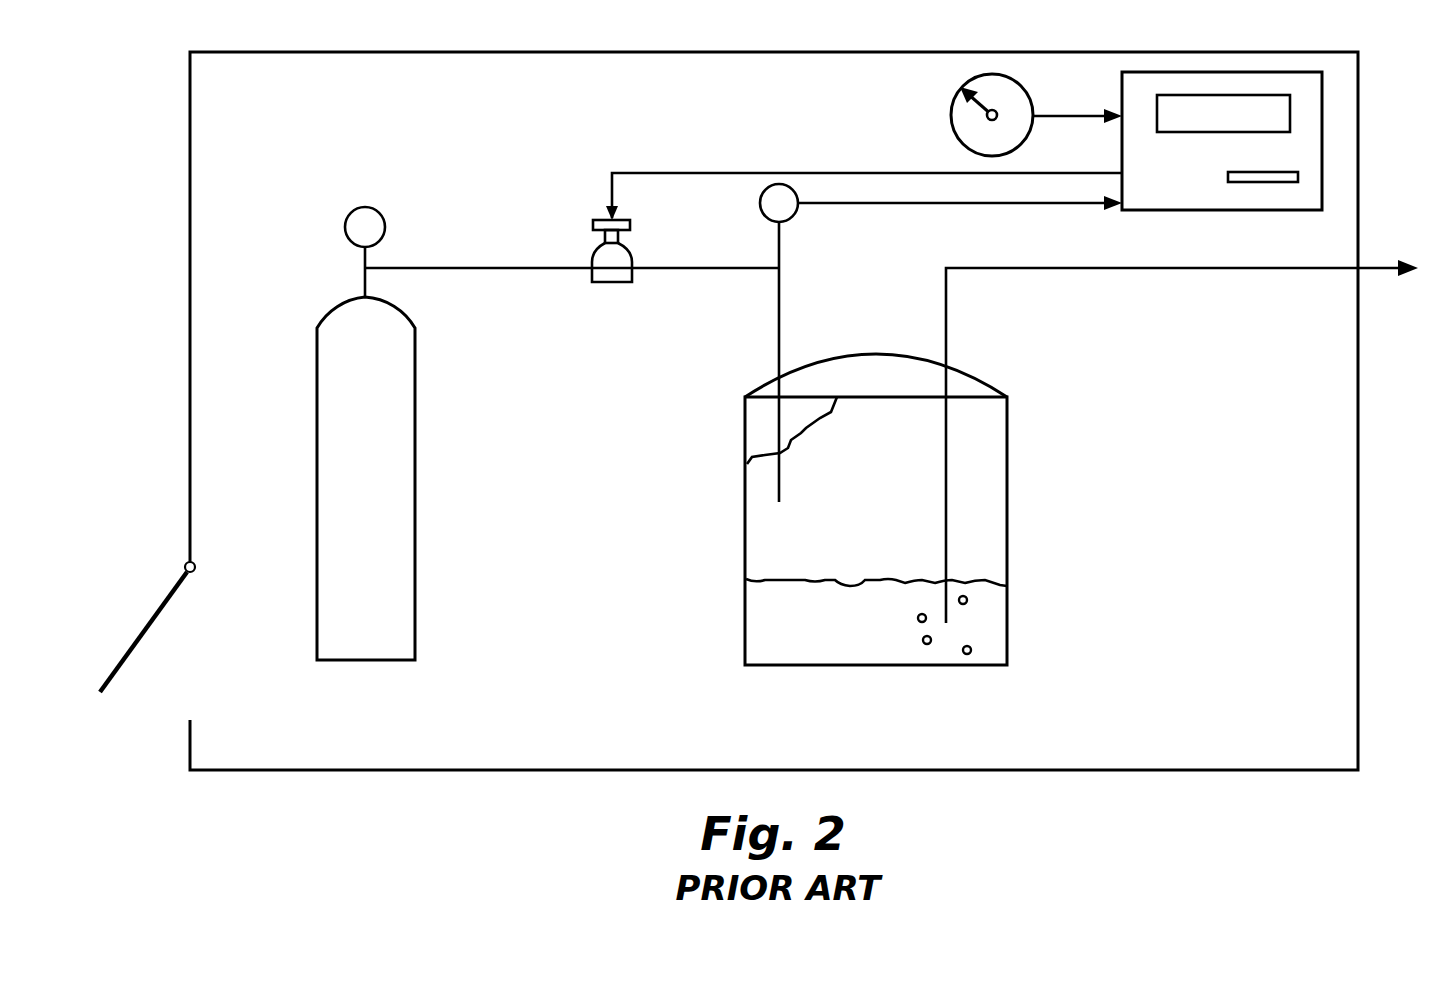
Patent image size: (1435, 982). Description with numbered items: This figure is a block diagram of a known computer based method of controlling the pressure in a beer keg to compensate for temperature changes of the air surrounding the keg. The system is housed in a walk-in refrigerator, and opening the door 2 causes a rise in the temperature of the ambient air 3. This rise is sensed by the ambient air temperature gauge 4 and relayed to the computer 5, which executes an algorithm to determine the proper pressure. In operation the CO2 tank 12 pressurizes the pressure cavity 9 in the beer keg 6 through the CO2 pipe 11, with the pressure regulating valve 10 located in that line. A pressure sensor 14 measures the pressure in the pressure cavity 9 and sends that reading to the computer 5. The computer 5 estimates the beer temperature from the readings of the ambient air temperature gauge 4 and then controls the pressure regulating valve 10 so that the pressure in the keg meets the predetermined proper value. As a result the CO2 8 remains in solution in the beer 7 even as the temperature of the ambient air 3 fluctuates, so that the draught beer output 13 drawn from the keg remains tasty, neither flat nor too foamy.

The door 2 is at (137, 647).
The ambient air 3 is at (600, 690).
The ambient air temperature gauge 4 is at (950, 135).
The computer 5 is at (1197, 210).
The beer keg 6 is at (1008, 442).
The beer 7 is at (888, 602).
The CO2 8 is at (973, 650).
The pressure cavity 9 is at (989, 496).
The pressure regulating valve 10 is at (592, 253).
The CO2 pipe 11 is at (733, 268).
The CO2 tank 12 is at (408, 469).
The draught beer output 13 is at (1370, 267).
The pressure sensor 14 is at (788, 221).